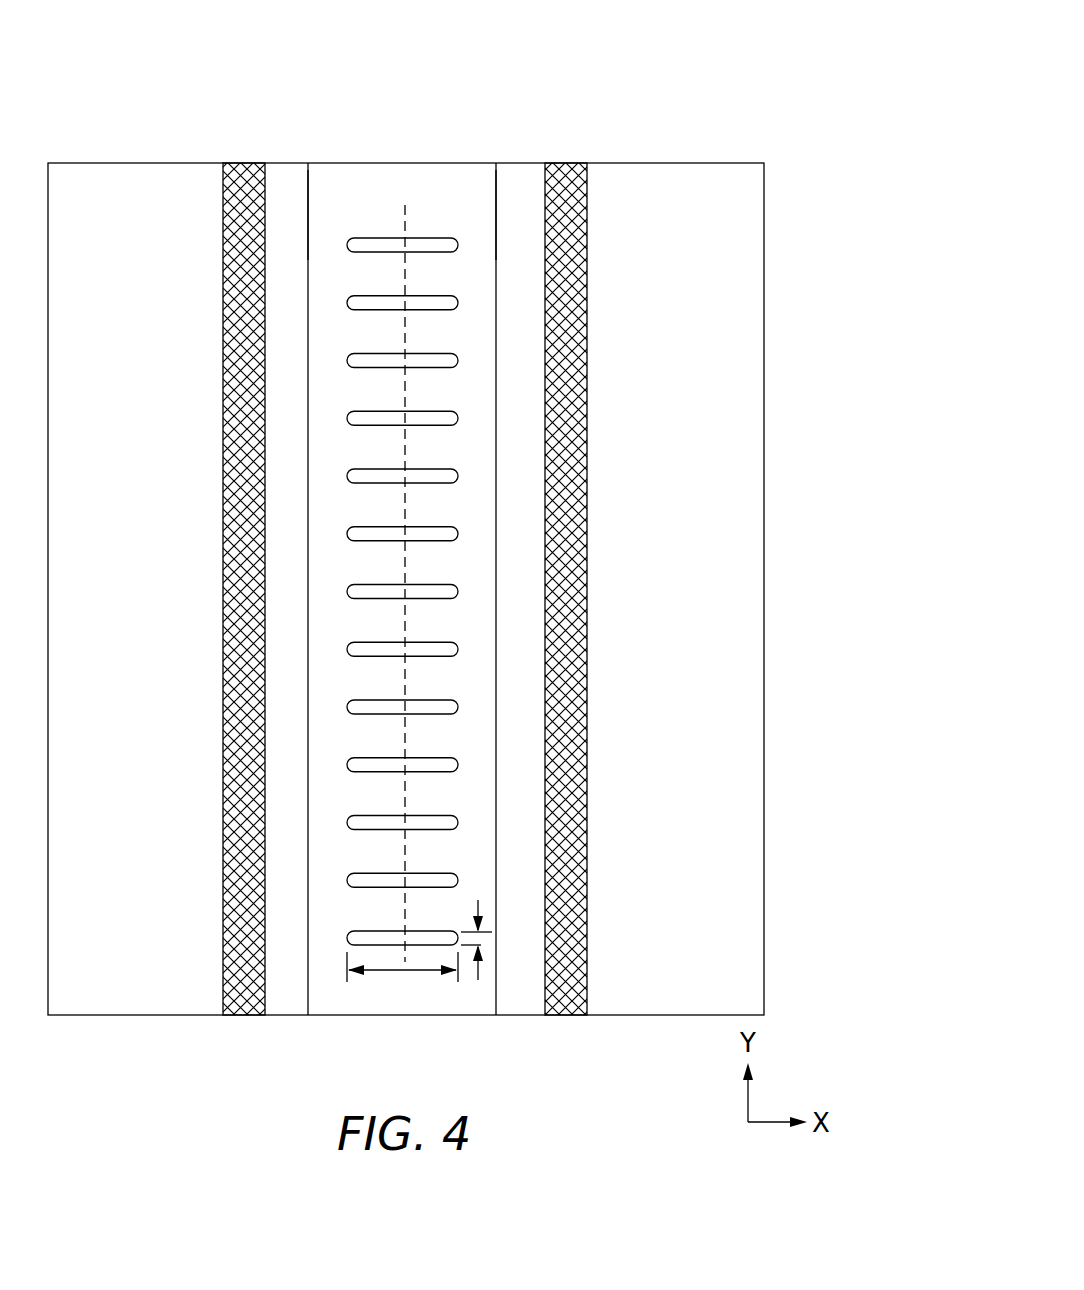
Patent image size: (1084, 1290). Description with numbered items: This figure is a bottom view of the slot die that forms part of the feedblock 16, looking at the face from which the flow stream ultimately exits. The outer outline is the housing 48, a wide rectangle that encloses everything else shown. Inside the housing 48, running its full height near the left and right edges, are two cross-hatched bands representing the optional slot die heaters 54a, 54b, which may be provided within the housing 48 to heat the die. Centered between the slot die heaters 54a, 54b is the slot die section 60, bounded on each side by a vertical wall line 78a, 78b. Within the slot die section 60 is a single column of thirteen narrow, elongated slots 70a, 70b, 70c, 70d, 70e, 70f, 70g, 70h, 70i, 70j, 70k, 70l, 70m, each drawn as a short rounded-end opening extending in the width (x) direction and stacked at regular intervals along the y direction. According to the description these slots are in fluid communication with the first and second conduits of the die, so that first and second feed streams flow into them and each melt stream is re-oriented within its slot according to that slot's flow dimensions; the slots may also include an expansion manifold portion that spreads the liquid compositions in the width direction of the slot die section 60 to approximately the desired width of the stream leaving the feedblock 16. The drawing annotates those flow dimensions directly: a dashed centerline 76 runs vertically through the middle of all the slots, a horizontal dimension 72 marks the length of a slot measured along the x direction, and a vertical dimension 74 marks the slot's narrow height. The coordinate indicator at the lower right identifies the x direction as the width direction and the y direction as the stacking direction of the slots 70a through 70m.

The feedblock 16 is at (702, 47).
The housing 48 is at (765, 240).
The slot die heater 54a is at (242, 1017).
The slot die heater 54b is at (557, 1017).
The slot die section 60 is at (457, 186).
The slot 70a is at (378, 931).
The slot 70b is at (378, 873).
The slot 70c is at (378, 815).
The slot 70d is at (378, 758).
The slot 70e is at (378, 700).
The slot 70f is at (378, 642).
The slot 70g is at (378, 584).
The slot 70h is at (378, 527).
The slot 70i is at (378, 469).
The slot 70j is at (378, 411).
The slot 70k is at (378, 353).
The slot 70l is at (378, 296).
The slot 70m is at (378, 238).
The nozzle length 72 is at (402, 979).
The nozzle width 74 is at (484, 940).
The centerline 76 is at (405, 569).
The first side wall 78a is at (308, 190).
The second side wall 78b is at (497, 182).